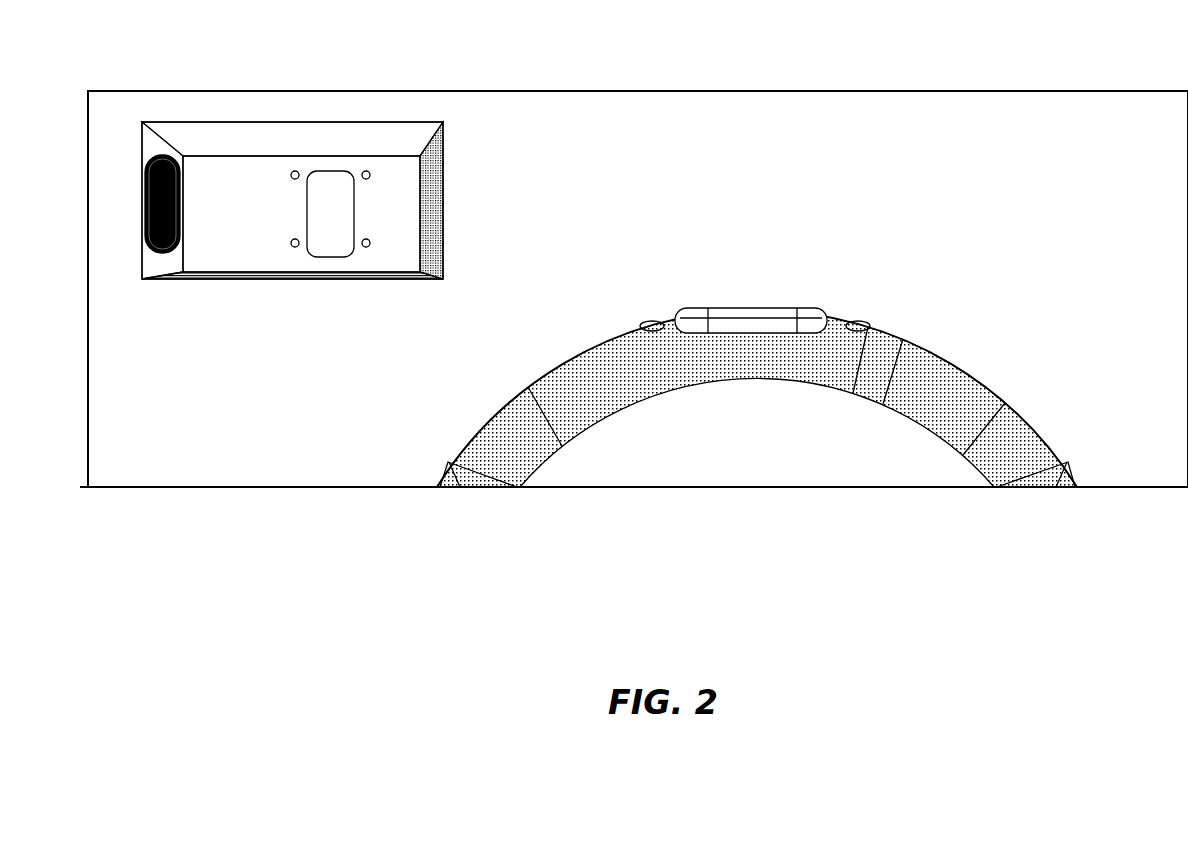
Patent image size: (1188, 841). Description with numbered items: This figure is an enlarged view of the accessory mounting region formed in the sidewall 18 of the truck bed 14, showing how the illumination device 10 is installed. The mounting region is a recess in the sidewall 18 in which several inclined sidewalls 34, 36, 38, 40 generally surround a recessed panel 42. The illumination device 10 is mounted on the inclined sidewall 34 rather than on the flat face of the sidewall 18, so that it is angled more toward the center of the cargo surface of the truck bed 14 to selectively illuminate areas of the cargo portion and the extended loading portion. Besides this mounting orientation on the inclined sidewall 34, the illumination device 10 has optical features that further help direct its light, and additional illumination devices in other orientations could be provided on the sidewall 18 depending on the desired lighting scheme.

The illumination device 10 is at (170, 158).
The truck bed 14 is at (600, 103).
The sidewall 18 is at (797, 103).
The inclined sidewall 34 is at (150, 257).
The inclined sidewall 36 is at (212, 280).
The inclined sidewall 38 is at (443, 217).
The inclined sidewall 40 is at (360, 140).
The recessed panel 42 is at (277, 232).